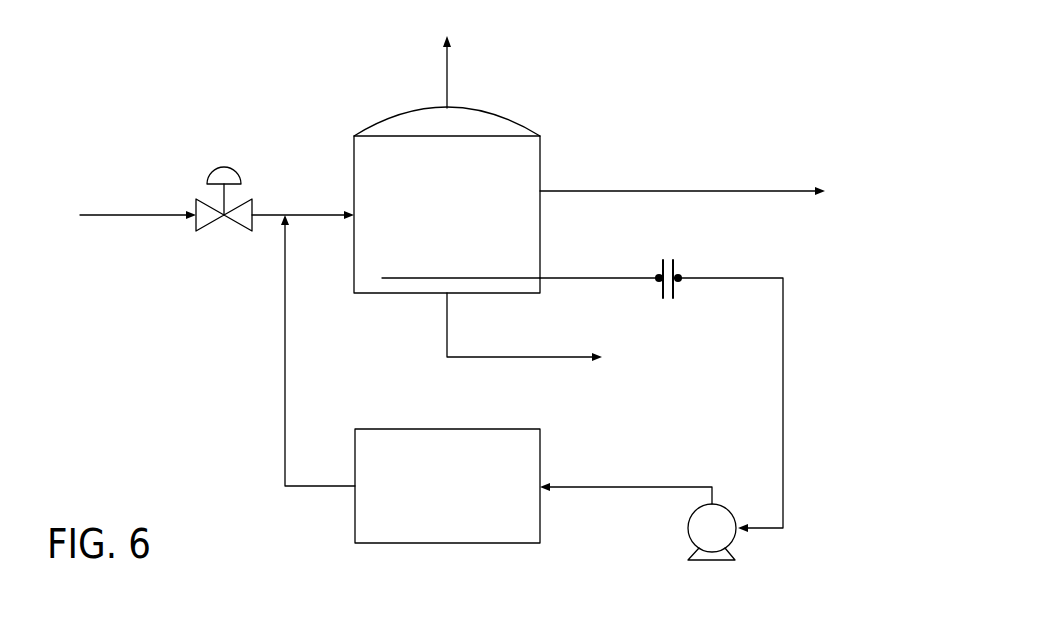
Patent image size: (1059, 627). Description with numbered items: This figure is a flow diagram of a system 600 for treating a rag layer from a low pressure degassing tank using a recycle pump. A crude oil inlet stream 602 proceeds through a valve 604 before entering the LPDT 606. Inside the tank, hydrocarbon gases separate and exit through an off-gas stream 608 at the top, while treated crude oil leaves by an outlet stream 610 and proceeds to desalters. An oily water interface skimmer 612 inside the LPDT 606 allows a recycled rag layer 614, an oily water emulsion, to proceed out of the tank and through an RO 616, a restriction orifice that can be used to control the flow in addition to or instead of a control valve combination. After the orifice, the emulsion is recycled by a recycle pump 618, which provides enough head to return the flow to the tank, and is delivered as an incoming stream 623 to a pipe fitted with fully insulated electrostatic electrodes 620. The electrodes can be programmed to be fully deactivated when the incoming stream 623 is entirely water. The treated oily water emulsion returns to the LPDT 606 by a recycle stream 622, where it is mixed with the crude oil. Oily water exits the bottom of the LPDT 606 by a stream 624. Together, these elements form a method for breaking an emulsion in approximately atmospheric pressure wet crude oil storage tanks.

The system 600 is at (127, 456).
The crude oil inlet stream 602 is at (110, 213).
The valve 604 is at (238, 226).
The LPDT 606 is at (474, 226).
The off-gas stream 608 is at (447, 63).
The outlet stream 610 is at (695, 190).
The oily water interface skimmer 612 is at (417, 282).
The recycled rag layer 614 is at (560, 276).
The RO 616 is at (677, 266).
The recycle pump 618 is at (715, 562).
The pipe fitted with fully insulated electrostatic electrodes 620 is at (474, 500).
The recycle stream 622 is at (285, 378).
The incoming stream 623 is at (612, 485).
The stream 624 is at (470, 358).